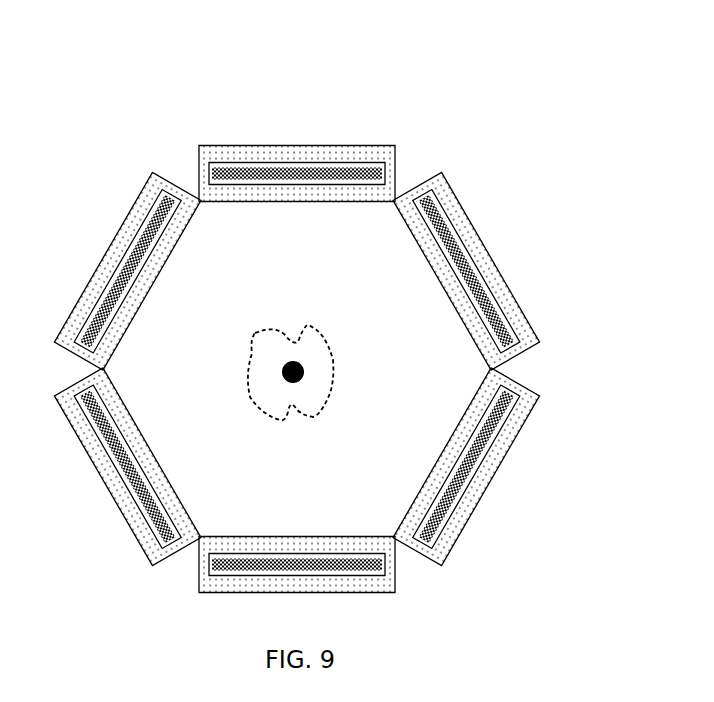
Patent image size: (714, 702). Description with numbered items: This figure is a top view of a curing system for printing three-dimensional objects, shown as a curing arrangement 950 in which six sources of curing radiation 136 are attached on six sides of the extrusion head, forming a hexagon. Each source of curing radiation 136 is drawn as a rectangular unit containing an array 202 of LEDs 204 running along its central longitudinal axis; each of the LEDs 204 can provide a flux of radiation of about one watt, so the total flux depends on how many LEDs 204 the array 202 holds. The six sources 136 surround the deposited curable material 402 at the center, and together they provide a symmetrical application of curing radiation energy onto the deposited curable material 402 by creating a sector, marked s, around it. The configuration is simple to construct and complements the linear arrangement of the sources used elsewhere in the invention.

The mold assembly with six mold plates 950 is at (300, 62).
The source of curing radiation 136 is at (173, 247).
The array of LEDs 202 is at (326, 150).
The LED 204 is at (258, 570).
The deposited curable material 402 is at (283, 364).